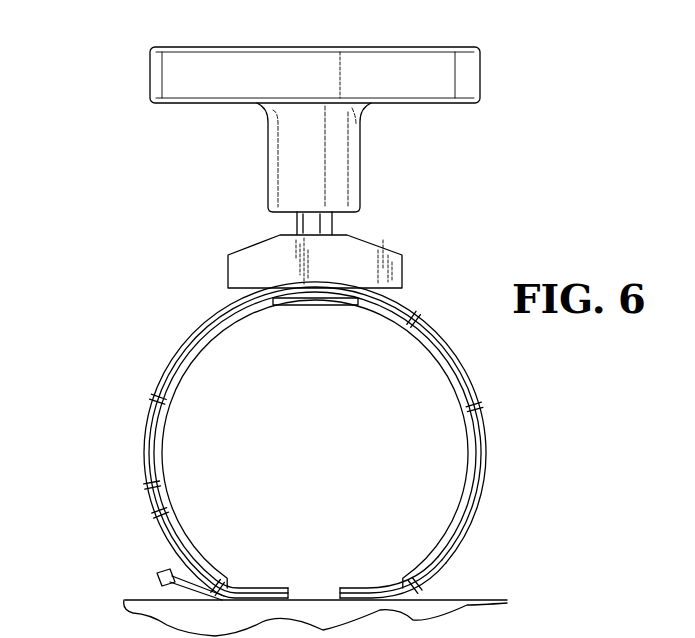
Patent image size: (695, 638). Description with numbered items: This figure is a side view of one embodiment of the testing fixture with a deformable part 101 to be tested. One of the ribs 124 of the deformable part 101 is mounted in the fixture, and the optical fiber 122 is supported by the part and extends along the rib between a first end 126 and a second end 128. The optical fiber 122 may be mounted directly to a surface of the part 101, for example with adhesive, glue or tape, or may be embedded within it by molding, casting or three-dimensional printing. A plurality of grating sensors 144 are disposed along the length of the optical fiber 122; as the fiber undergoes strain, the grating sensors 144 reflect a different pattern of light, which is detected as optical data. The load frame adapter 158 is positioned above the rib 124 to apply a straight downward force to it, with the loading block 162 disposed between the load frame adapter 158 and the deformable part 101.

The deformable part 101 is at (482, 389).
The load frame adapter 158 is at (462, 45).
The loading block 162 is at (403, 257).
The optical fiber 122 is at (150, 487).
The rib 124 is at (165, 430).
The first end 126 is at (160, 572).
The second end 128 is at (412, 593).
The grating sensors 144 is at (210, 313).